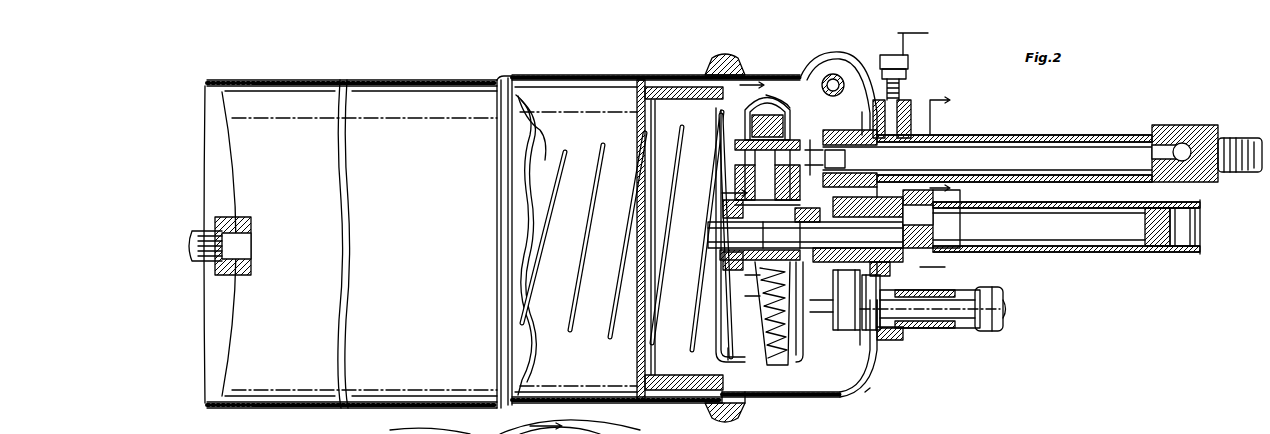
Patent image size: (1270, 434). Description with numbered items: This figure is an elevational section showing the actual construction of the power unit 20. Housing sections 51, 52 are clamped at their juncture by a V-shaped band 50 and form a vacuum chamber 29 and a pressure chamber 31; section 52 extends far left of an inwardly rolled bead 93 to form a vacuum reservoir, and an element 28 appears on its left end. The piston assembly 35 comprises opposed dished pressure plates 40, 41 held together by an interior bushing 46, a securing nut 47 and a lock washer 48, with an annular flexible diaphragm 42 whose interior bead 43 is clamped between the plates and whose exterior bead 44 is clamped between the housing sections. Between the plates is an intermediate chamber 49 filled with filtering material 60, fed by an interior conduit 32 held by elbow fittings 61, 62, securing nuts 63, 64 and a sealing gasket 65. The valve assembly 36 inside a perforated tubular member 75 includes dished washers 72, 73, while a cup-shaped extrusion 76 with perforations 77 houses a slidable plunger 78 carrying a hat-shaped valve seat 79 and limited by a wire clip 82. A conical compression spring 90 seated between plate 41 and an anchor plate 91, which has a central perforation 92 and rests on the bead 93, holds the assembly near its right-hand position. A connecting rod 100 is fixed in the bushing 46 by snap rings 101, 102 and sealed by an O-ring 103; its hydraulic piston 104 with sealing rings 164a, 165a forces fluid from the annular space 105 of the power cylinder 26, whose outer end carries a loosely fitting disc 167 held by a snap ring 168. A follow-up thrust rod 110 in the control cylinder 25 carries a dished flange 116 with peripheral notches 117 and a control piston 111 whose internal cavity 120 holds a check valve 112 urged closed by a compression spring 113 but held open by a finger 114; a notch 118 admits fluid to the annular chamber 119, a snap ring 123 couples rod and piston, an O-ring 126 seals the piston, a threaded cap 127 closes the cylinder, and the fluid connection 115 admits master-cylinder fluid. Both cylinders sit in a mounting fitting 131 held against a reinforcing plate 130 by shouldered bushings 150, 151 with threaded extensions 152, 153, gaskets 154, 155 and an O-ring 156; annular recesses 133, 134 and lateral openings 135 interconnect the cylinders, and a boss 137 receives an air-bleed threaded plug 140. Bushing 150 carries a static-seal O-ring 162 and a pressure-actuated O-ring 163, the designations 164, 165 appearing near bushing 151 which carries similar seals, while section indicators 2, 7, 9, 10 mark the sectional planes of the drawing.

The section line 2 is at (515, 427).
The section line 7 is at (945, 145).
The section line 9 is at (739, 145).
The section line 10 is at (942, 270).
The power unit 20 is at (640, 78).
The control cylinder 25 is at (1045, 135).
The power cylinder 26 is at (1105, 252).
The filler plug 28 is at (215, 262).
The vacuum chamber 29 is at (565, 78).
The pressure chamber 31 is at (835, 398).
The interior conduit 32 is at (822, 96).
The piston assembly 35 is at (800, 105).
The valve assembly 36 is at (866, 112).
The right-hand pressure plate 40 is at (790, 397).
The left-hand pressure plate 41 is at (755, 357).
The flexible diaphragm 42 is at (700, 405).
The interior bead 43 is at (800, 362).
The exterior bead 44 is at (735, 420).
The interior bushing 46 is at (725, 216).
The securing nut 47 is at (730, 257).
The lock washer 48 is at (745, 275).
The intermediate chamber 49 is at (745, 296).
The V-shaped band 50 is at (735, 58).
The housing section 51 is at (866, 393).
The housing section 52 is at (620, 408).
The filtering material 60 is at (762, 300).
The elbow fitting 61 is at (866, 325).
The elbow fitting 62 is at (830, 312).
The securing nut 63 is at (898, 338).
The securing nut 64 is at (725, 352).
The sealing gasket 65 is at (862, 355).
The dished washer 72 is at (670, 212).
The dished washer 73 is at (748, 120).
The perforated tubular member 75 is at (718, 112).
The cup-shaped extrusion 76 is at (680, 132).
The perforations 77 is at (740, 148).
The slidable plunger 78 is at (738, 178).
The hat-shaped valve seat 79 is at (785, 100).
The wire clip 82 is at (735, 200).
The conical compression spring 90 is at (603, 143).
The anchor plate 91 is at (528, 133).
The central perforation 92 is at (527, 238).
The inwardly rolled bead 93 is at (512, 75).
The connecting rod 100 is at (1060, 252).
The snap ring 101 is at (805, 235).
The snap ring 102 is at (888, 242).
The sealing O-ring 103 is at (781, 235).
The hydraulic piston 104 is at (1162, 255).
The annular space 105 is at (1010, 252).
The follow-up thrust rod 110 is at (1085, 148).
The control piston 111 is at (1190, 168).
The check valve 112 is at (1190, 146).
The compression spring 113 is at (1185, 143).
The finger 114 is at (1225, 168).
The fluid connection 115 is at (1240, 138).
The dished flange member 116 is at (825, 185).
The peripheral notches 117 is at (815, 150).
The notch 118 is at (1165, 140).
The annular chamber 119 is at (1045, 182).
The internal cavity 120 is at (1160, 180).
The snap ring 123 is at (1158, 140).
The sealing O-ring 126 is at (1215, 138).
The threaded cap 127 is at (1193, 176).
The reinforcing plate 130 is at (880, 362).
The mounting fitting 131 is at (940, 143).
The internal annular recess 133 is at (928, 130).
The internal annular recess 134 is at (927, 292).
The lateral openings 135 is at (990, 212).
The boss 137 is at (912, 108).
The threaded plug 140 is at (910, 66).
The shouldered bushing 150 is at (892, 60).
The shouldered bushing 151 is at (830, 335).
The threaded extension 152 is at (1020, 148).
The threaded extension 153 is at (985, 183).
The sealing gasket 154 is at (930, 215).
The sealing gasket 155 is at (1015, 135).
The sealing O-ring 156 is at (915, 142).
The O-ring 162 is at (840, 159).
The O-ring 163 is at (870, 150).
The block 164 is at (815, 222).
The sealing ring 164a is at (1168, 250).
The block 165 is at (890, 210).
The sealing ring 165a is at (1152, 247).
The loosely fitting disc 167 is at (1200, 222).
The snap ring 168 is at (1200, 250).